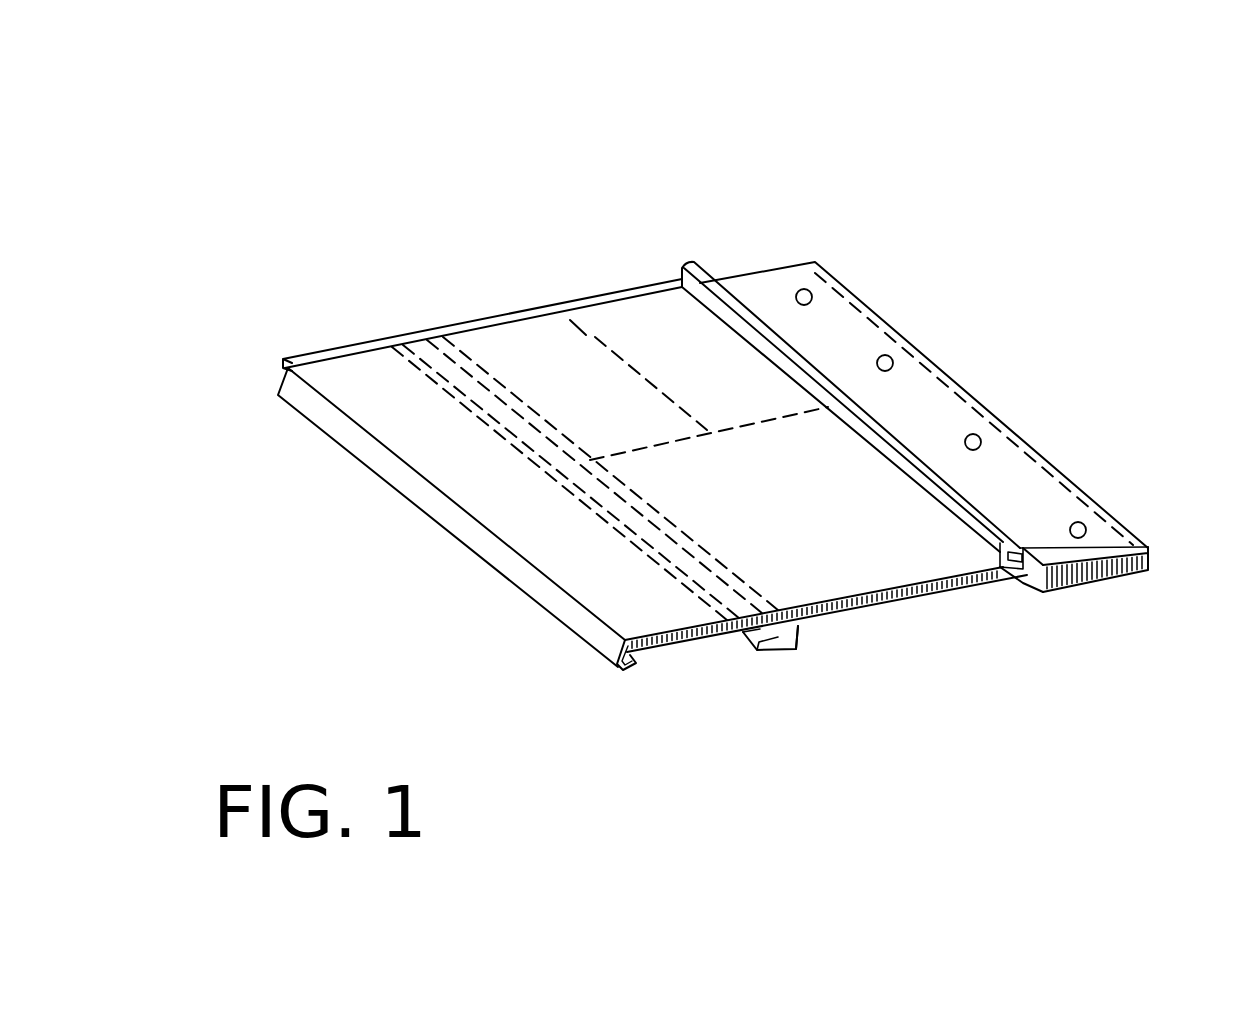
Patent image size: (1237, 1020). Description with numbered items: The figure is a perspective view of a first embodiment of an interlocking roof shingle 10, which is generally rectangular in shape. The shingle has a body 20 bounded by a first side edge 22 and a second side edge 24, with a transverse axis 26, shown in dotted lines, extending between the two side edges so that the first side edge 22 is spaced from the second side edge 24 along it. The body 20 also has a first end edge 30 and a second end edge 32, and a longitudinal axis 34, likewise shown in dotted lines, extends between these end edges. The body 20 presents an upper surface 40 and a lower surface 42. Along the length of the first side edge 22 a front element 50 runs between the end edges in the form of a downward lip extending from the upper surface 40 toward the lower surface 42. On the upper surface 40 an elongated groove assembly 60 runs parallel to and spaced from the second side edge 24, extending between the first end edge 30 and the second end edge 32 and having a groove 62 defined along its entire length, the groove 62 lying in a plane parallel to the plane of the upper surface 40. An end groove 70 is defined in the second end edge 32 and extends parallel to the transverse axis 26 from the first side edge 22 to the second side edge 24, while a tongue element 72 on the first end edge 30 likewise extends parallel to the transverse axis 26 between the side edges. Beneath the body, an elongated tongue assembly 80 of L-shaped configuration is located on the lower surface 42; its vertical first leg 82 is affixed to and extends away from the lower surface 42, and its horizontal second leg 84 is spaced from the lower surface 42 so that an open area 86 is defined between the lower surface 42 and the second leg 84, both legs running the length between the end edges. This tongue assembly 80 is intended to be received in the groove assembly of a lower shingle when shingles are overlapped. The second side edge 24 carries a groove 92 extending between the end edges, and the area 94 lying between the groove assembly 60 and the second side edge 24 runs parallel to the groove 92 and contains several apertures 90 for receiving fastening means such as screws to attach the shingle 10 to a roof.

The interlocking roof shingle 10 is at (717, 153).
The body 20 is at (747, 422).
The first side edge 22 is at (368, 453).
The second side edge 24 is at (827, 263).
The transverse axis 26 is at (638, 472).
The first end edge 30 is at (546, 314).
The second end edge 32 is at (847, 595).
The longitudinal axis 34 is at (607, 343).
The upper surface 40 is at (682, 632).
The lower surface 42 is at (660, 634).
The front element 50 is at (462, 525).
The elongated groove assembly 60 is at (694, 261).
The groove 62 is at (1117, 575).
The end groove 70 is at (837, 623).
The tongue element 72 is at (463, 325).
The elongated tongue assembly 80 is at (782, 658).
The first leg 82 is at (693, 548).
The second leg 84 is at (763, 650).
The open area 86 is at (753, 650).
The apertures 90 is at (812, 287).
The groove 92 is at (1148, 560).
The area 94 is at (882, 413).